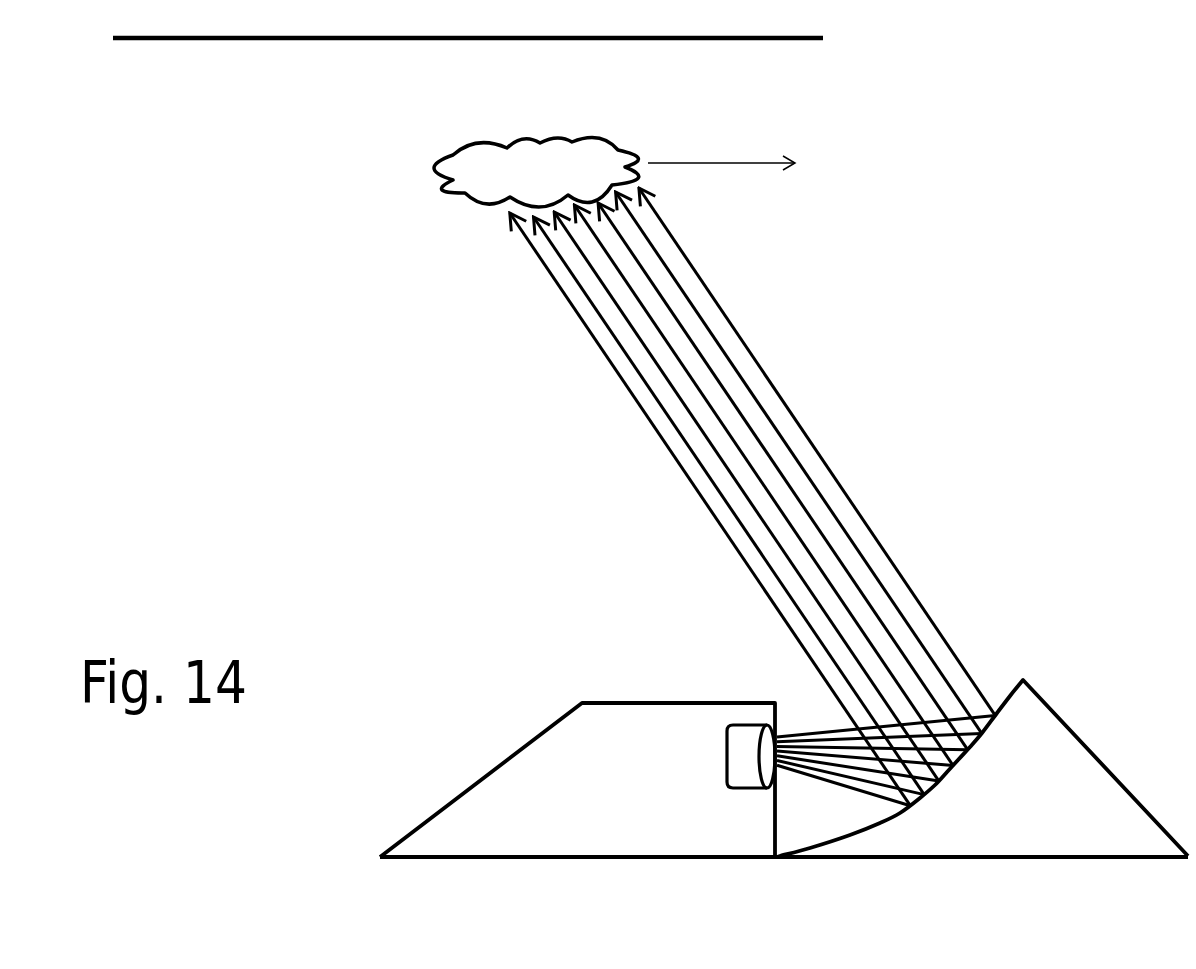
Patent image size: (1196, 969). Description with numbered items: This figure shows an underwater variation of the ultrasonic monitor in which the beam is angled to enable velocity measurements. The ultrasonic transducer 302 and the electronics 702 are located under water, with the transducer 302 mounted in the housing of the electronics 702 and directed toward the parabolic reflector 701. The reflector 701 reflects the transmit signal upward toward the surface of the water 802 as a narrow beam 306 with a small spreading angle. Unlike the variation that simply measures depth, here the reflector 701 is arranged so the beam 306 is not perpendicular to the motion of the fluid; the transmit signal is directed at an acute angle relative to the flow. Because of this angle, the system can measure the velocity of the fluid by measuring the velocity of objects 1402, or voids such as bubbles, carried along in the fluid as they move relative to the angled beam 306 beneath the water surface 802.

The surface of the water 802 is at (470, 39).
The objects 1402 is at (465, 187).
The narrow beam 306 is at (778, 389).
The electronics 702 is at (533, 740).
The reflector 701 is at (960, 765).
The ultrasonic transducer 302 is at (727, 757).